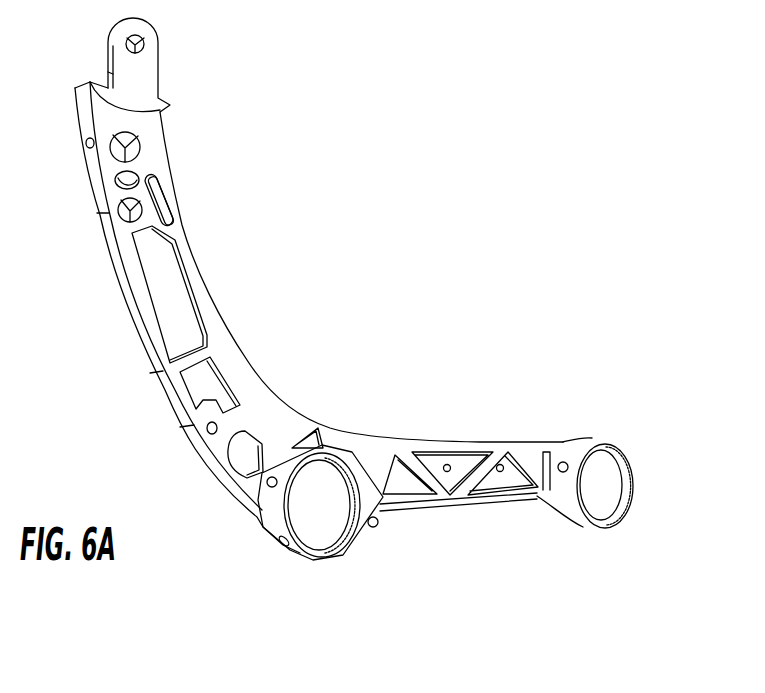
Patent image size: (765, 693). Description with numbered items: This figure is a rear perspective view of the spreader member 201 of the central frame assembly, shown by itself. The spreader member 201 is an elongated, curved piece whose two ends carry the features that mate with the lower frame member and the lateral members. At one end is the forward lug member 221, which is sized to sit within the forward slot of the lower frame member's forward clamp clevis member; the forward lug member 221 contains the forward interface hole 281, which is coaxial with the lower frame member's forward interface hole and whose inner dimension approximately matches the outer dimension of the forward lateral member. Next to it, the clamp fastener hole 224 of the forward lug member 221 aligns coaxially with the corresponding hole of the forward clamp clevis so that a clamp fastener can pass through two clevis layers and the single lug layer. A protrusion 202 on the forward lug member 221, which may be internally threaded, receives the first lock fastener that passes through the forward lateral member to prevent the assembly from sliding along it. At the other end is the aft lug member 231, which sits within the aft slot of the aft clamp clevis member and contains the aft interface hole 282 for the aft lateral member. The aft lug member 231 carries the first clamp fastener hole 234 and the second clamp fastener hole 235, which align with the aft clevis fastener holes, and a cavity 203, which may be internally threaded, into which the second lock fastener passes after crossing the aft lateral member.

The spreader member 201 is at (532, 180).
The protrusion 202 is at (541, 479).
The cavity 203 is at (310, 498).
The forward lug member 221 is at (637, 472).
The clamp fastener hole 224 is at (562, 474).
The aft lug member 231 is at (298, 548).
The first clamp fastener hole 234 is at (377, 527).
The second clamp fastener hole 235 is at (267, 500).
The forward interface hole 281 is at (603, 500).
The aft interface hole 282 is at (323, 527).